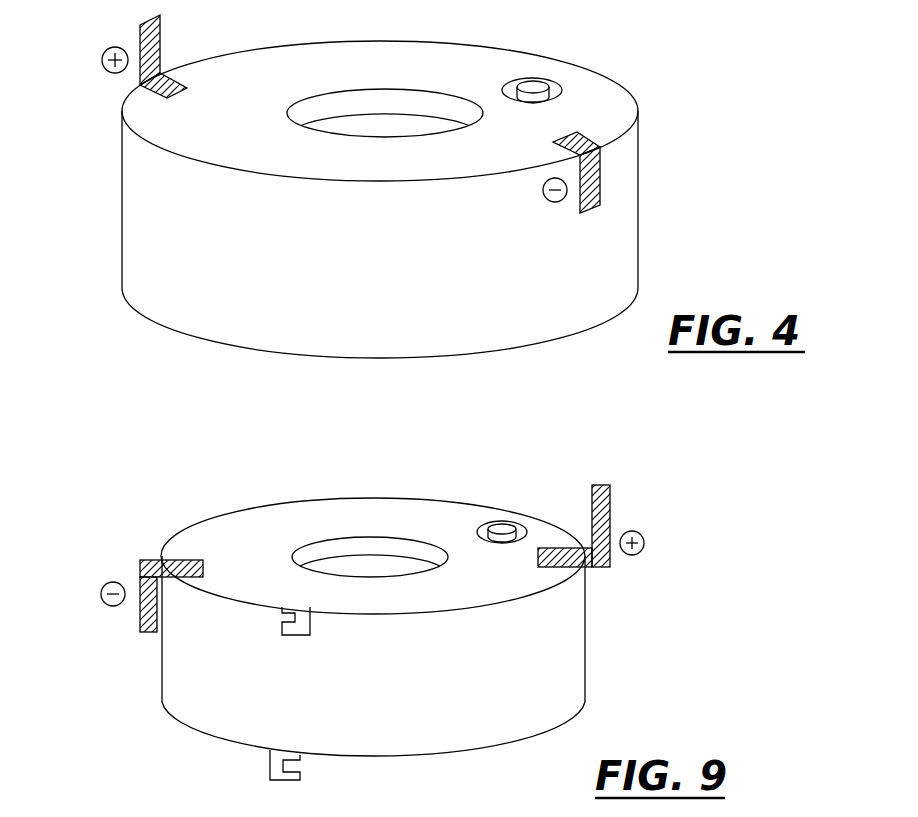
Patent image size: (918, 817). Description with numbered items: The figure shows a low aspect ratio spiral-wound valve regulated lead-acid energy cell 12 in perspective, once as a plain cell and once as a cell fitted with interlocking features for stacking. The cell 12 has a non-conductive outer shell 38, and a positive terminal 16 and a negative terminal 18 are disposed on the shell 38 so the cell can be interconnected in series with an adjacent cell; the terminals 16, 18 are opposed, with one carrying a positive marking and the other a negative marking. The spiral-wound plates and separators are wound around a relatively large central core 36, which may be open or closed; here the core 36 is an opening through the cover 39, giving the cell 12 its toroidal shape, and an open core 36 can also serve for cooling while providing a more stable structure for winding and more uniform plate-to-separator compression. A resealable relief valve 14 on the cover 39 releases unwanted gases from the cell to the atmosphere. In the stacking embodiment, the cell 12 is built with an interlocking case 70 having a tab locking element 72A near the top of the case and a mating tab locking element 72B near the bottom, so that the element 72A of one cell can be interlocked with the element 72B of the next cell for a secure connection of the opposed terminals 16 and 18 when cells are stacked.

In FIG. 4, the spiral-wound VRLA energy cell 12 is at (411, 199).
In FIG. 9, the spiral-wound VRLA energy cell 12 is at (352, 630).
In FIG. 4, the resealable relief valve 14 is at (537, 82).
In FIG. 9, the resealable relief valve 14 is at (508, 527).
In FIG. 4, the positive terminal 16 is at (138, 23).
In FIG. 9, the positive terminal 16 is at (602, 520).
In FIG. 4, the negative terminal 18 is at (603, 161).
In FIG. 9, the negative terminal 18 is at (146, 586).
In FIG. 4, the central core 36 is at (353, 90).
In FIG. 9, the central core 36 is at (370, 557).
In FIG. 4, the non-conductive outer shell 38 is at (620, 253).
In FIG. 4, the cover 39 is at (268, 151).
In FIG. 9, the interlocking case 70 is at (218, 708).
In FIG. 9, the tab locking element 72A is at (308, 622).
In FIG. 9, the tab locking element 72B is at (303, 778).